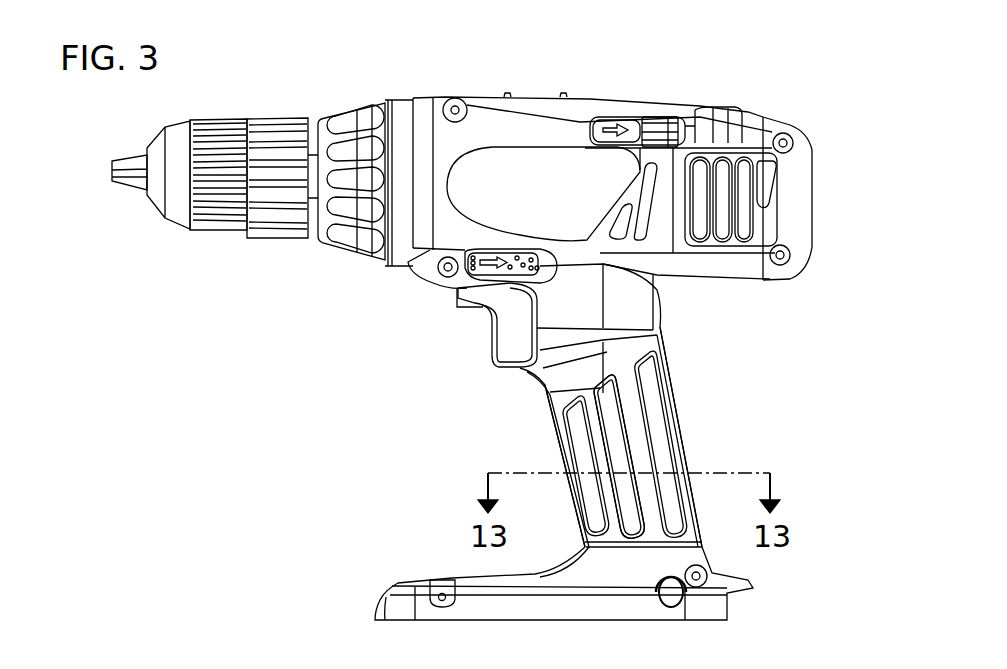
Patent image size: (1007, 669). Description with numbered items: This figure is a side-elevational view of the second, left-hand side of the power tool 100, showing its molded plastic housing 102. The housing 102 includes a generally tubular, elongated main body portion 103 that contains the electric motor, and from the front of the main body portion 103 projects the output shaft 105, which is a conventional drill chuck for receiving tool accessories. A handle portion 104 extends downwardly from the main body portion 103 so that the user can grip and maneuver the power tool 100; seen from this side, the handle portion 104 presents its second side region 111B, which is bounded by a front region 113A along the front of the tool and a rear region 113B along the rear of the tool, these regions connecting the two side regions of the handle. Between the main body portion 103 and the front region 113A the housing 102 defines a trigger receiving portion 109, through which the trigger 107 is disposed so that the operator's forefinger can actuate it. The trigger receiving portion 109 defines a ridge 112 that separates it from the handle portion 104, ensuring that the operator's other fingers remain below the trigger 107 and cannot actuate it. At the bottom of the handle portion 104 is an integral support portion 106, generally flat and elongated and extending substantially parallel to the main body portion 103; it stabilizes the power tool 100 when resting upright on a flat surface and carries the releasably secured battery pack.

The power tool 100 is at (737, 93).
The housing 102 is at (803, 138).
The main body portion 103 is at (480, 120).
The handle portion 104 is at (612, 422).
The output shaft 105 is at (178, 137).
The support portion 106 is at (443, 580).
The trigger 107 is at (517, 340).
The trigger receiving portion 109 is at (573, 302).
The second side region 111B is at (637, 445).
The ridge 112 is at (523, 368).
The front region 113A is at (543, 445).
The rear region 113B is at (695, 397).